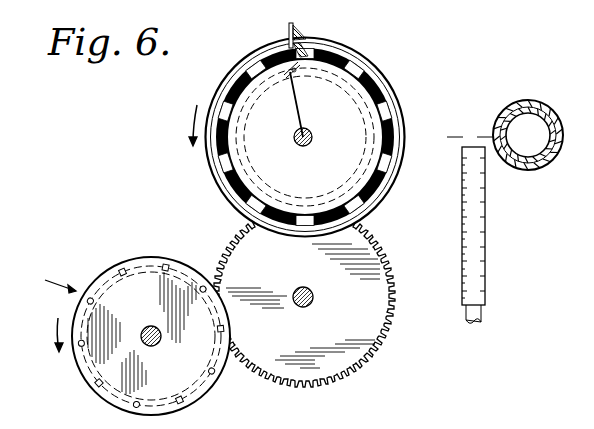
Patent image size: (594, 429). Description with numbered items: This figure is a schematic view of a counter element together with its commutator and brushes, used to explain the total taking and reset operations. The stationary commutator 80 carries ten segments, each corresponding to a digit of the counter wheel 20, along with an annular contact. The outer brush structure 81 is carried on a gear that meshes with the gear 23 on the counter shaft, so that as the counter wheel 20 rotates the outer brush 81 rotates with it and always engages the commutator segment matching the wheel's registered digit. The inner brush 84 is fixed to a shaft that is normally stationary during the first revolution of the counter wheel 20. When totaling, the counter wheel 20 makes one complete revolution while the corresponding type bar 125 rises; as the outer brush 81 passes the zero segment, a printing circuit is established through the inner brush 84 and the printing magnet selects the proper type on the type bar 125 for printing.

The counter wheel 20 is at (137, 262).
The gear 23 is at (366, 277).
The stationary commutator 80 is at (371, 76).
The outer brush structure 81 is at (300, 31).
The inner brush 84 is at (298, 110).
The type bar 125 is at (477, 225).